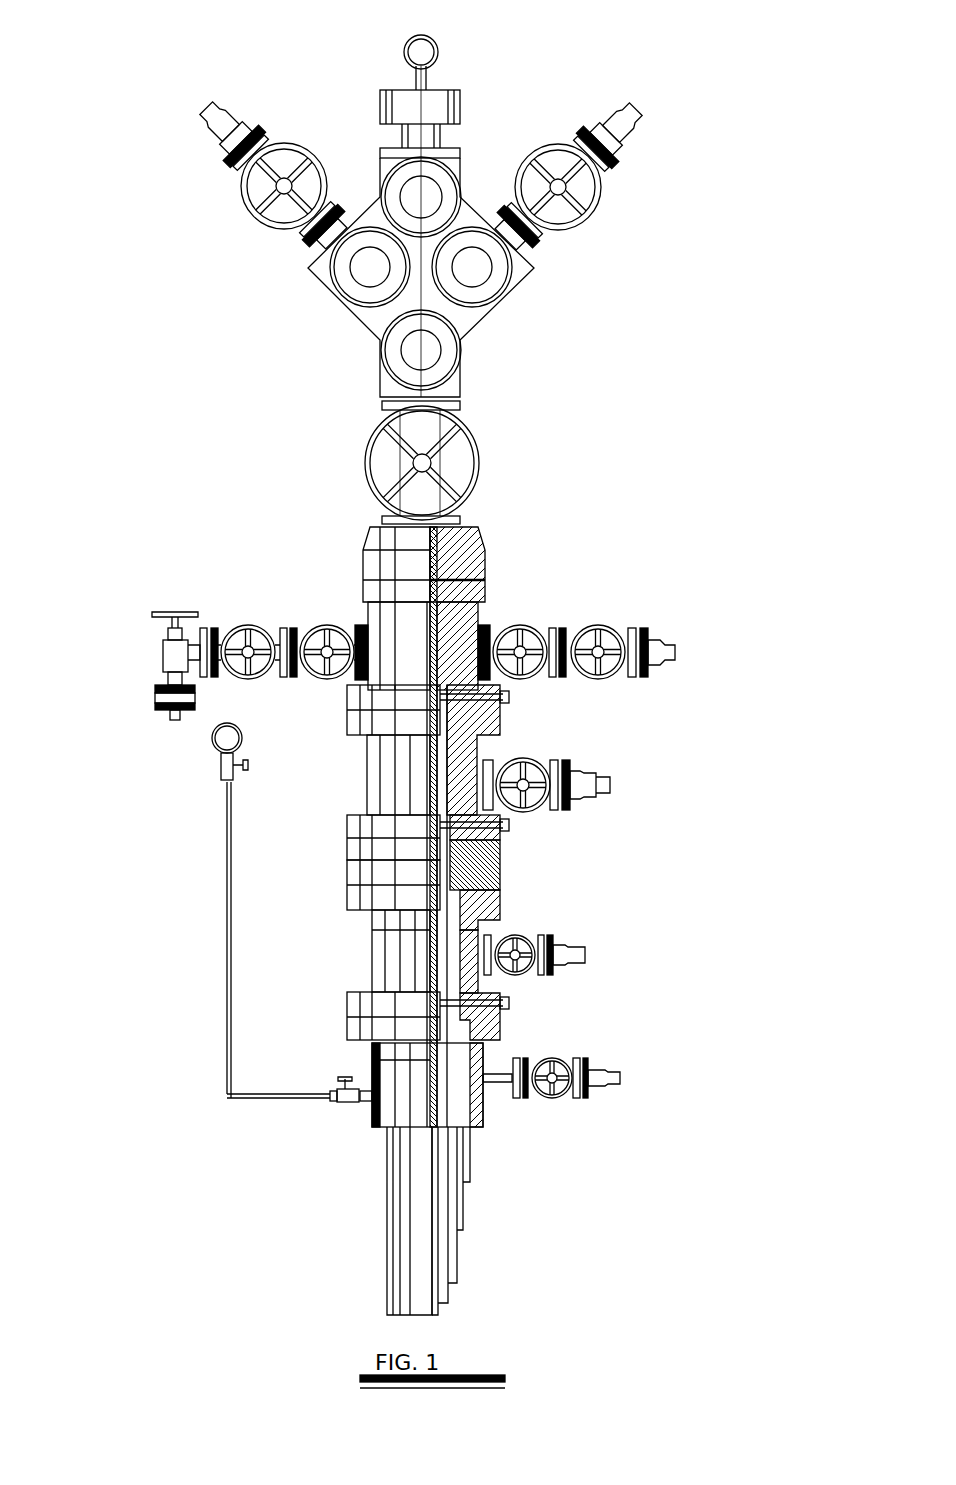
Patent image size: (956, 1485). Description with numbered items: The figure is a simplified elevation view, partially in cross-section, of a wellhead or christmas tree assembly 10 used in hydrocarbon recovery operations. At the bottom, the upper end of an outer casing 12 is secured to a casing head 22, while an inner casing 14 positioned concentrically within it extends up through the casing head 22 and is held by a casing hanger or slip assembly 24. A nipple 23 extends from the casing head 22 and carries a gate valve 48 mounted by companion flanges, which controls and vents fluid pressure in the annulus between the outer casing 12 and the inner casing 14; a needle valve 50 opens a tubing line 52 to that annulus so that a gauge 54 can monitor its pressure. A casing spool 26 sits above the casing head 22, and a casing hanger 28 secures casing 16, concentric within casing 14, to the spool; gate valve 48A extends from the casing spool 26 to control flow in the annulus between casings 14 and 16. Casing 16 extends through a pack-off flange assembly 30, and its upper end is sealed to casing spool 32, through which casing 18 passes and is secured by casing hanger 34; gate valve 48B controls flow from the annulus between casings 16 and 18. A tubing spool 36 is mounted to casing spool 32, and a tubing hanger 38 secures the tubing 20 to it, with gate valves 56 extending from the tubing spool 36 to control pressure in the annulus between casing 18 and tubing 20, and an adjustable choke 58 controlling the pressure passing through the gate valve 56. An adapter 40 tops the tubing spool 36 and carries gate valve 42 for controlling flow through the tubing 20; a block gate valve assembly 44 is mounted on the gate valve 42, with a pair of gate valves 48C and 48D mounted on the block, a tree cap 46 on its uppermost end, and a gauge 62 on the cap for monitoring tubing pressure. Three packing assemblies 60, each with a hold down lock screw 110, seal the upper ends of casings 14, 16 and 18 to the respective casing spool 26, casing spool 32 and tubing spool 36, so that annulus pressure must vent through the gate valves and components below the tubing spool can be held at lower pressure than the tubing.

The wellhead or christmas tree assembly 10 is at (608, 818).
The outer casing 12 is at (472, 1172).
The inner casing 14 is at (465, 1208).
The casing 16 is at (457, 1263).
The casing 18 is at (448, 1296).
The tubing 20 is at (438, 1312).
The casing head 22 is at (385, 1057).
The nipple 23 is at (493, 1090).
The casing hanger or slip assembly 24 is at (478, 1050).
The casing spool 26 is at (390, 945).
The casing hanger 28 is at (470, 925).
The pack-off flange assembly 30 is at (505, 870).
The casing spool 32 is at (400, 745).
The casing hanger 34 is at (480, 740).
The tubing spool 36 is at (365, 630).
The tubing hanger 38 is at (480, 600).
The adapter 40 is at (470, 530).
The gate valve 42 is at (435, 430).
The block gate valve assembly 44 is at (472, 312).
The tree cap 46 is at (440, 130).
The gate valve 48 is at (565, 1098).
The gate valve 48A is at (550, 960).
The gate valve 48B is at (565, 762).
The gate valve 48C is at (255, 222).
The gate valve 48D is at (585, 222).
The needle valve 50 is at (360, 1103).
The tubing line 52 is at (225, 930).
The gauge 54 is at (217, 760).
The gate valves 56 is at (265, 635).
The adjustable choke 58 is at (165, 660).
The packing assembly 60 is at (440, 1000).
The gauge 62 is at (435, 45).
The hold down lock screw 110 is at (510, 1002).